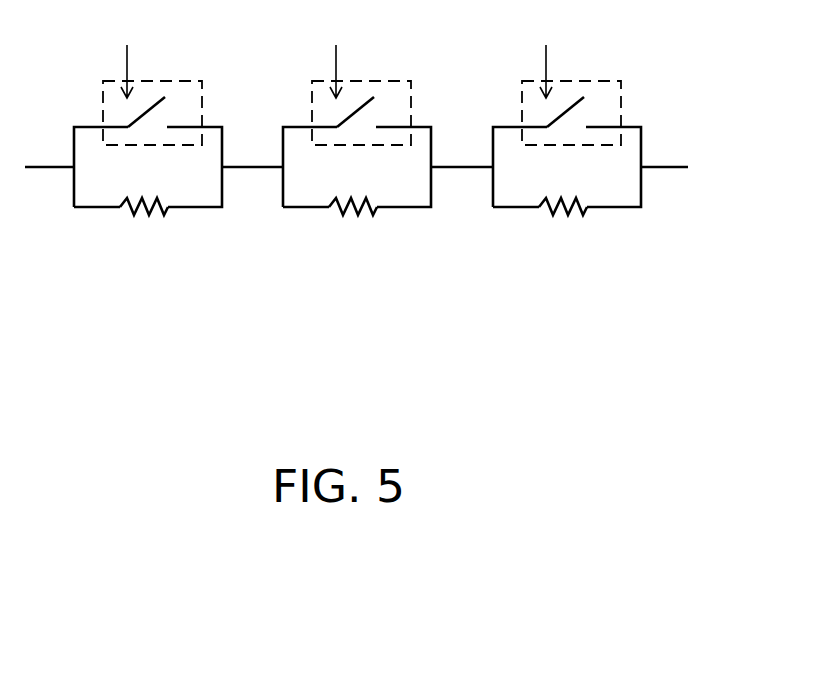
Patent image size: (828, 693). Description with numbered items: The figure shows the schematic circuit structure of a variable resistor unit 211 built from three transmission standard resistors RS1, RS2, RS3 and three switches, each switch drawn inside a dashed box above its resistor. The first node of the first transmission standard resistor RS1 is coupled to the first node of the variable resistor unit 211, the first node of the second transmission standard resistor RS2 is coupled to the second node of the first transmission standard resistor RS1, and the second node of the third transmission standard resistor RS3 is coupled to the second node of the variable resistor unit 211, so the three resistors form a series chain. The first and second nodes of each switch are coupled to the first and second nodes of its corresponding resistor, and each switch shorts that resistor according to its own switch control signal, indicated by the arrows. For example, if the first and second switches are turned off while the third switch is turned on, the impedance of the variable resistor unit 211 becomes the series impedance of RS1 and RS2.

The variable resistor unit 211 is at (356, 160).
The first transmission standard resistor RS1 is at (567, 171).
The second transmission standard resistor RS2 is at (357, 171).
The third transmission standard resistor RS3 is at (148, 171).